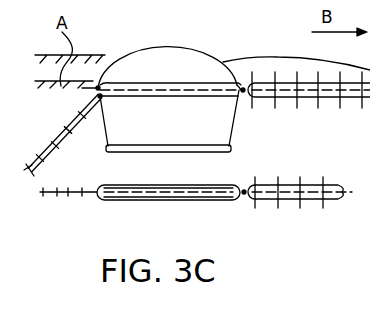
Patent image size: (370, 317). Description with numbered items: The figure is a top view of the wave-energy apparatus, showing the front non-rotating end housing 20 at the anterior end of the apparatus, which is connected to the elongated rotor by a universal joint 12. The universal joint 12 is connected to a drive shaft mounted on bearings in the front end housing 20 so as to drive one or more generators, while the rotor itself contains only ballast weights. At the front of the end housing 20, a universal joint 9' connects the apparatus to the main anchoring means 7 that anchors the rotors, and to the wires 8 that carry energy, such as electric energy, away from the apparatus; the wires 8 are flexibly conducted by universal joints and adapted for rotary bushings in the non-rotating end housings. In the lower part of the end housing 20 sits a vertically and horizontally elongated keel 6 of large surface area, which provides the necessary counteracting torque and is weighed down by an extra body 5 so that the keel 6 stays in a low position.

The front non-rotating end housing 20 is at (160, 85).
The universal joint 12 is at (240, 88).
The universal joint 9' is at (76, 102).
The main anchoring means 7 is at (48, 146).
The wires 8 is at (72, 134).
The keel 6 is at (226, 117).
The extra body 5 is at (229, 147).